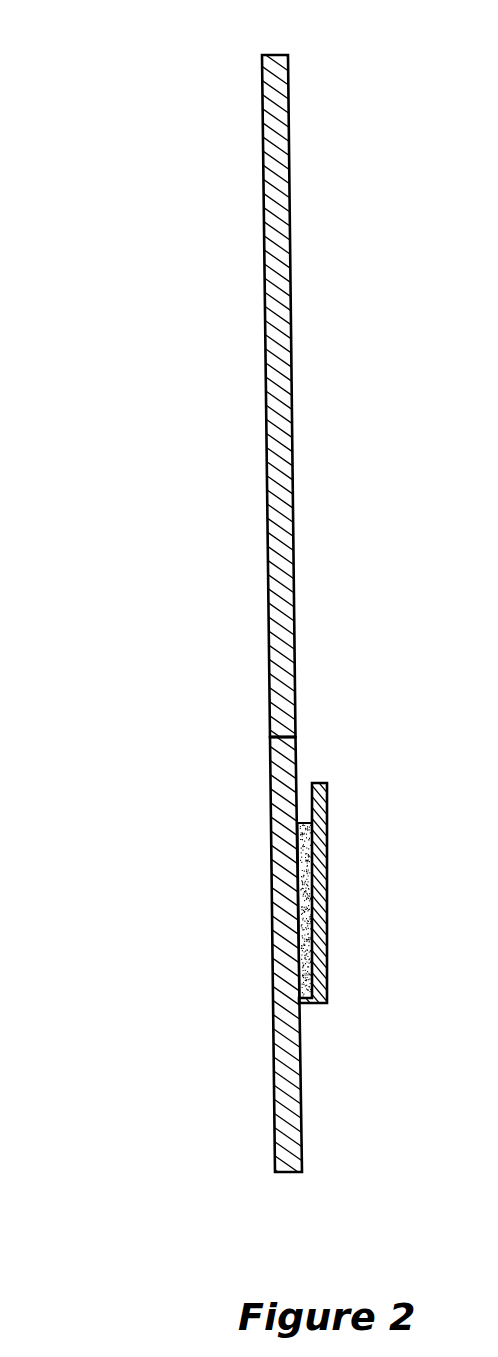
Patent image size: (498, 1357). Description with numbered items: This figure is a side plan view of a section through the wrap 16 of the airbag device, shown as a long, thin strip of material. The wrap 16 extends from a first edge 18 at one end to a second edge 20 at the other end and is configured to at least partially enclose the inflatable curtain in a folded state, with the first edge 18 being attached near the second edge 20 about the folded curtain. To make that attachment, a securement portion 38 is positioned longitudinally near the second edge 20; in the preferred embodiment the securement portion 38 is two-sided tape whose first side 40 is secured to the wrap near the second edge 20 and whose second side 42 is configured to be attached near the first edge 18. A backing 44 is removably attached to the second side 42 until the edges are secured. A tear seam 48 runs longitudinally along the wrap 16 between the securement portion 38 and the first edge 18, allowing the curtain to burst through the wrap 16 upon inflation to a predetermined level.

The wrap 16 is at (160, 183).
The first edge 18 is at (286, 57).
The second edge 20 is at (273, 1165).
The tear seam 48 is at (296, 733).
The securement portion 38 is at (290, 938).
The first side 40 is at (297, 888).
The second side 42 is at (327, 881).
The backing 44 is at (327, 829).